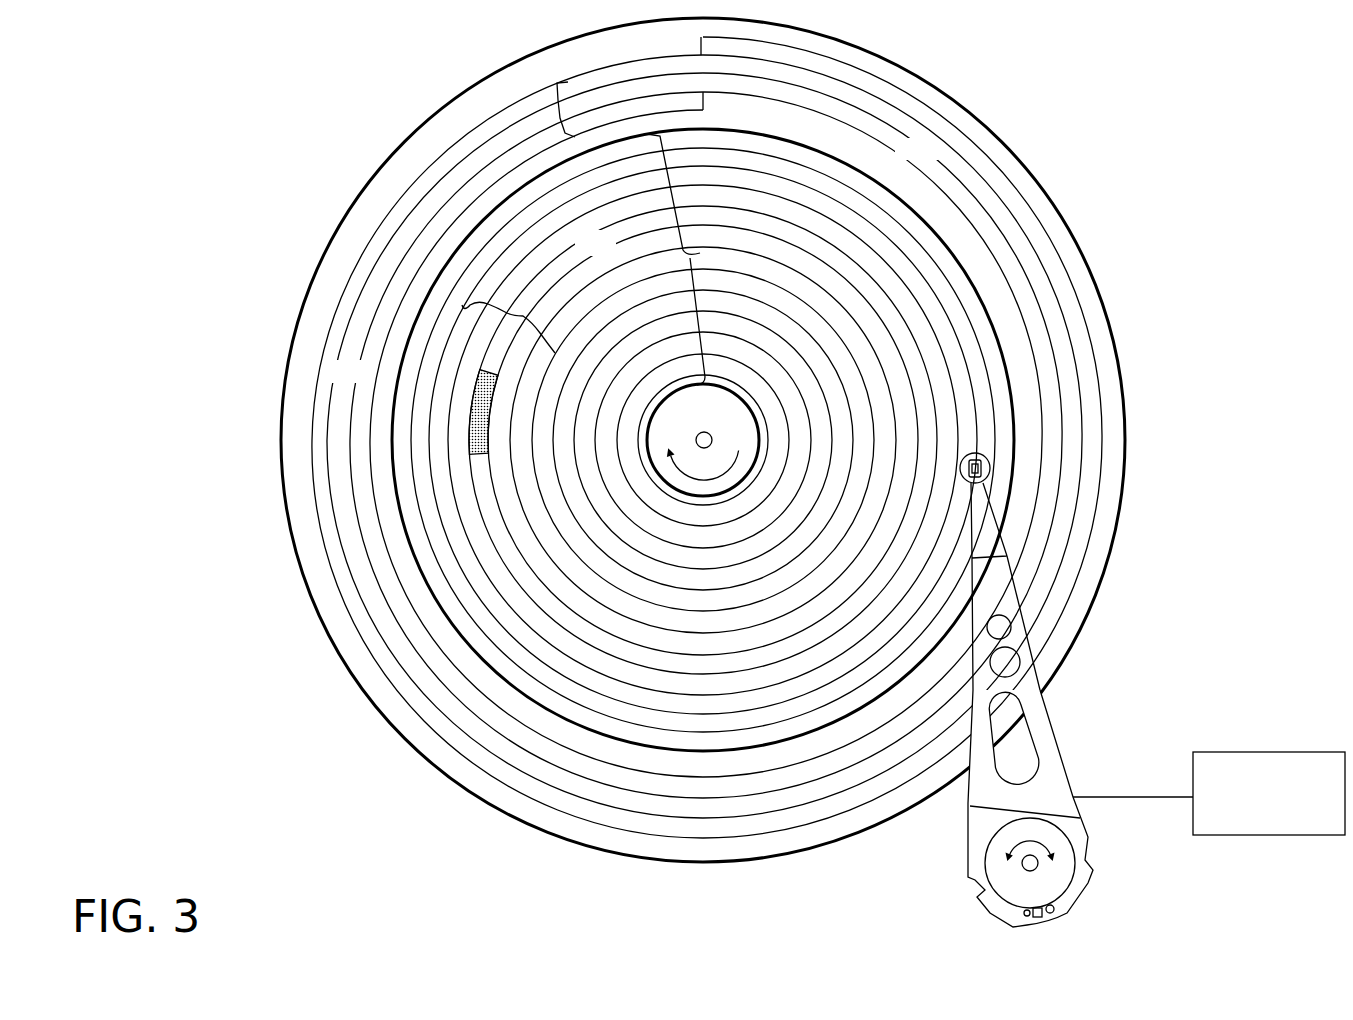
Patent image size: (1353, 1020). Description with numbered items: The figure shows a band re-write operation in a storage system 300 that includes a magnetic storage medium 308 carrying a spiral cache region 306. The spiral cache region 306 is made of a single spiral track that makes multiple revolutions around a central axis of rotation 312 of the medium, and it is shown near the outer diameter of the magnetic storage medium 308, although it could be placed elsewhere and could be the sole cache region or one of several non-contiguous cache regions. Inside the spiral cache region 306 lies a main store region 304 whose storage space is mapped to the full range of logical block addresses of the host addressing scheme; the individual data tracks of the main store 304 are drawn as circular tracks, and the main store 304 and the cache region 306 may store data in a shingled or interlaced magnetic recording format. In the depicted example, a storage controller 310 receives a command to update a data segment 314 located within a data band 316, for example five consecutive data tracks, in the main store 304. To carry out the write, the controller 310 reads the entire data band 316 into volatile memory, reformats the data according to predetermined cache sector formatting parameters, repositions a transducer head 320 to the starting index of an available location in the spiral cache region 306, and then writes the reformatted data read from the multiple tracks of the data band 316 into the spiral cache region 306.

The storage system 300 is at (142, 84).
The main store region 304 is at (700, 253).
The spiral cache region 306 is at (557, 100).
The magnetic storage medium 308 is at (1075, 300).
The storage controller 310 is at (1292, 807).
The central axis of rotation 312 is at (705, 432).
The data segment 314 is at (477, 423).
The data band 316 is at (523, 316).
The transducer head 320 is at (990, 463).